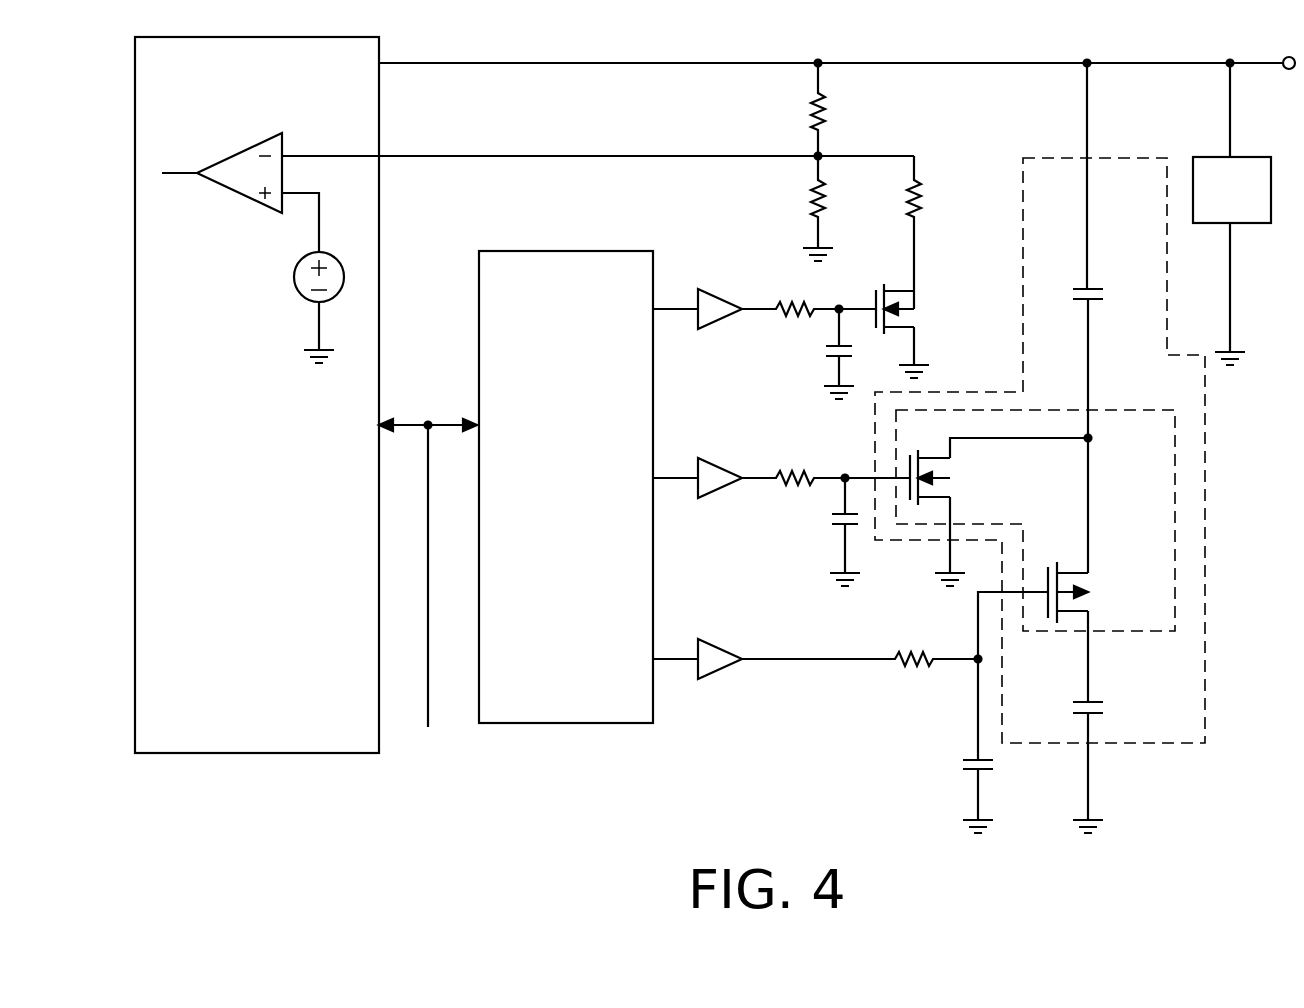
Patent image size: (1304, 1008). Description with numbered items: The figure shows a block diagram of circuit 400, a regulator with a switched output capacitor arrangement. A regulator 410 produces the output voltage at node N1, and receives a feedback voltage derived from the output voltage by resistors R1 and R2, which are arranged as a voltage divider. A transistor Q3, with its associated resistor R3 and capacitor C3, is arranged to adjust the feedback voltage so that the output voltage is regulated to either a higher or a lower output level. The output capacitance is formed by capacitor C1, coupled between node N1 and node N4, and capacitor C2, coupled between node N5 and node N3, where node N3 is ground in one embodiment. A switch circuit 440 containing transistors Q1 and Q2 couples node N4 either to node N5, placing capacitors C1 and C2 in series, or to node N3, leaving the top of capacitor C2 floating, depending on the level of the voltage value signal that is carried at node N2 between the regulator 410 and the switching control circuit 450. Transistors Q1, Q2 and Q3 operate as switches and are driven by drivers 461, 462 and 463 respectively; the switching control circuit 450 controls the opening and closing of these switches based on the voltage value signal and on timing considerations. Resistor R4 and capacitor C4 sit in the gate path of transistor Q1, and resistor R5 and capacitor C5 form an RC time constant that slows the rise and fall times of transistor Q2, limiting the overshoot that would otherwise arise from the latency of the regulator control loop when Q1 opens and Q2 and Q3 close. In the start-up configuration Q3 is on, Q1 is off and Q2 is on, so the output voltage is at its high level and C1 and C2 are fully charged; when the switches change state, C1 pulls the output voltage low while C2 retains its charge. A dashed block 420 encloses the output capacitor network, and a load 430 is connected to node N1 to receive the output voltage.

The circuit 400 is at (942, 22).
The regulator 410 is at (231, 477).
The charge pump unit 420 is at (1152, 197).
The load 430 is at (1215, 213).
The switch circuit 440 is at (1171, 437).
The switching control circuit 450 is at (543, 597).
The driver 461 is at (722, 469).
The driver 462 is at (722, 650).
The driver 463 is at (720, 300).
The node N1 is at (1086, 61).
The node N2 is at (428, 423).
The node N3 is at (1090, 776).
The node N4 is at (1090, 440).
The node N5 is at (1090, 676).
The resistor R1 is at (799, 109).
The resistor R2 is at (804, 208).
The resistor R3 is at (847, 236).
The resistor R4 is at (826, 464).
The resistor R5 is at (860, 647).
The capacitor C1 is at (1101, 318).
The capacitor C2 is at (1102, 722).
The capacitor C3 is at (824, 354).
The capacitor C4 is at (830, 532).
The capacitor C5 is at (963, 746).
The transistor Q1 is at (999, 512).
The transistor Q2 is at (1050, 610).
The transistor Q3 is at (913, 331).